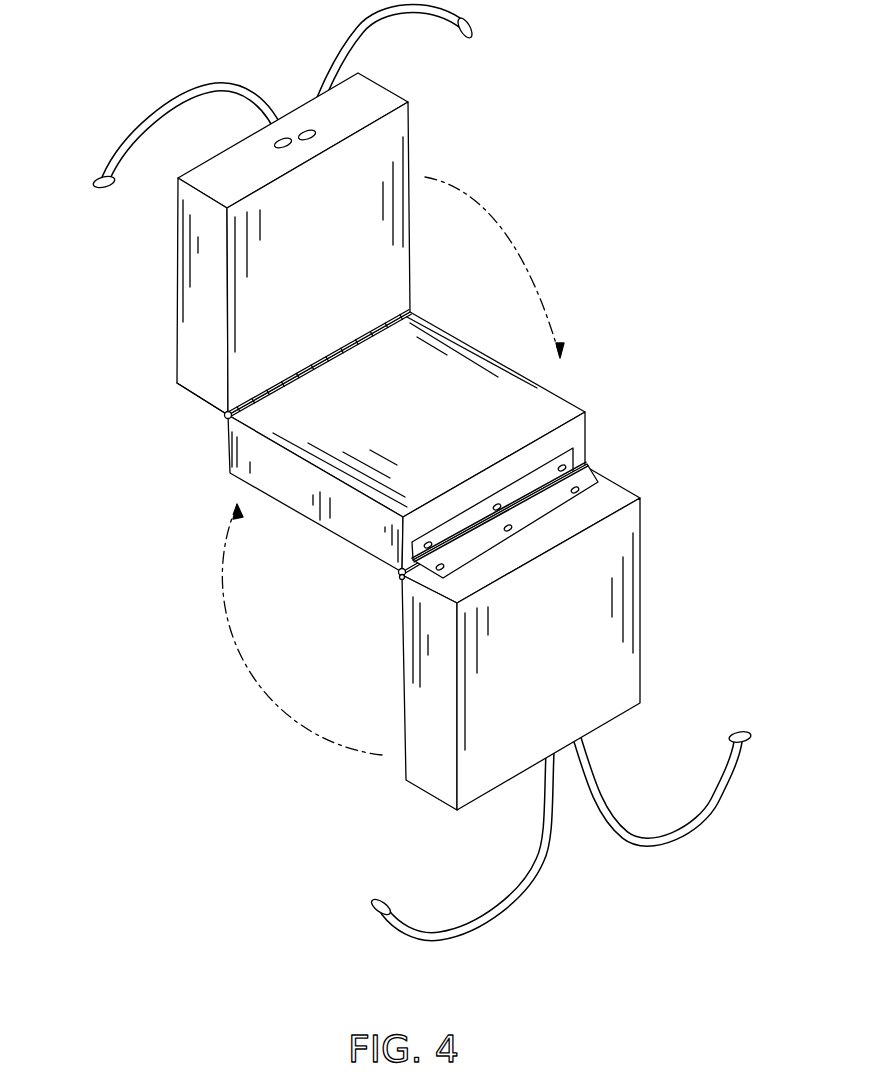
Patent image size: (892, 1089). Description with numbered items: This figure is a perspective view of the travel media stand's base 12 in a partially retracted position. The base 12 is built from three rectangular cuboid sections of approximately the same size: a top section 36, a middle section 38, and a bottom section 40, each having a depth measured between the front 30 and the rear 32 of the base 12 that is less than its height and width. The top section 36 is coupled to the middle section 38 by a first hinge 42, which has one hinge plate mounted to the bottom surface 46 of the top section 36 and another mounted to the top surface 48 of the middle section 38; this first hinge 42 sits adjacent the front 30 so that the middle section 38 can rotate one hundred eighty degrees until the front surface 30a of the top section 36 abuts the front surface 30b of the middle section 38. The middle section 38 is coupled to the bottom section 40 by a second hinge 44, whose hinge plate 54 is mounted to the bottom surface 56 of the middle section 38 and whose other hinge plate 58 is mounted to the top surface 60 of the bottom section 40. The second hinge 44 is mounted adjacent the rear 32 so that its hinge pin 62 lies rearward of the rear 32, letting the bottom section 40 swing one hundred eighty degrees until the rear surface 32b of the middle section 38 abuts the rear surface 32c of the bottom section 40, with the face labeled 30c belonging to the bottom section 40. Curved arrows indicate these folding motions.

The base 12 is at (413, 158).
The front 30 is at (307, 244).
The front surface of top section 30a is at (332, 235).
The front surface of middle section 30b is at (408, 420).
The bottom section 30c is at (573, 660).
The rear 32 is at (407, 655).
The rear surface of middle section 32b is at (262, 490).
The rear surface of bottom section 32c is at (405, 728).
The top section 36 is at (200, 262).
The middle section 38 is at (453, 414).
The bottom section 40 is at (595, 654).
The first hinge 42 is at (300, 370).
The second hinge 44 is at (398, 568).
The bottom surface of top section 46 is at (183, 387).
The top surface of middle section 48 is at (227, 445).
The hinge plate 54 is at (582, 458).
The bottom surface of middle section 56 is at (573, 430).
The hinge plate 58 is at (597, 477).
The top surface of bottom section 60 is at (603, 508).
The hinge pin 62 is at (400, 580).